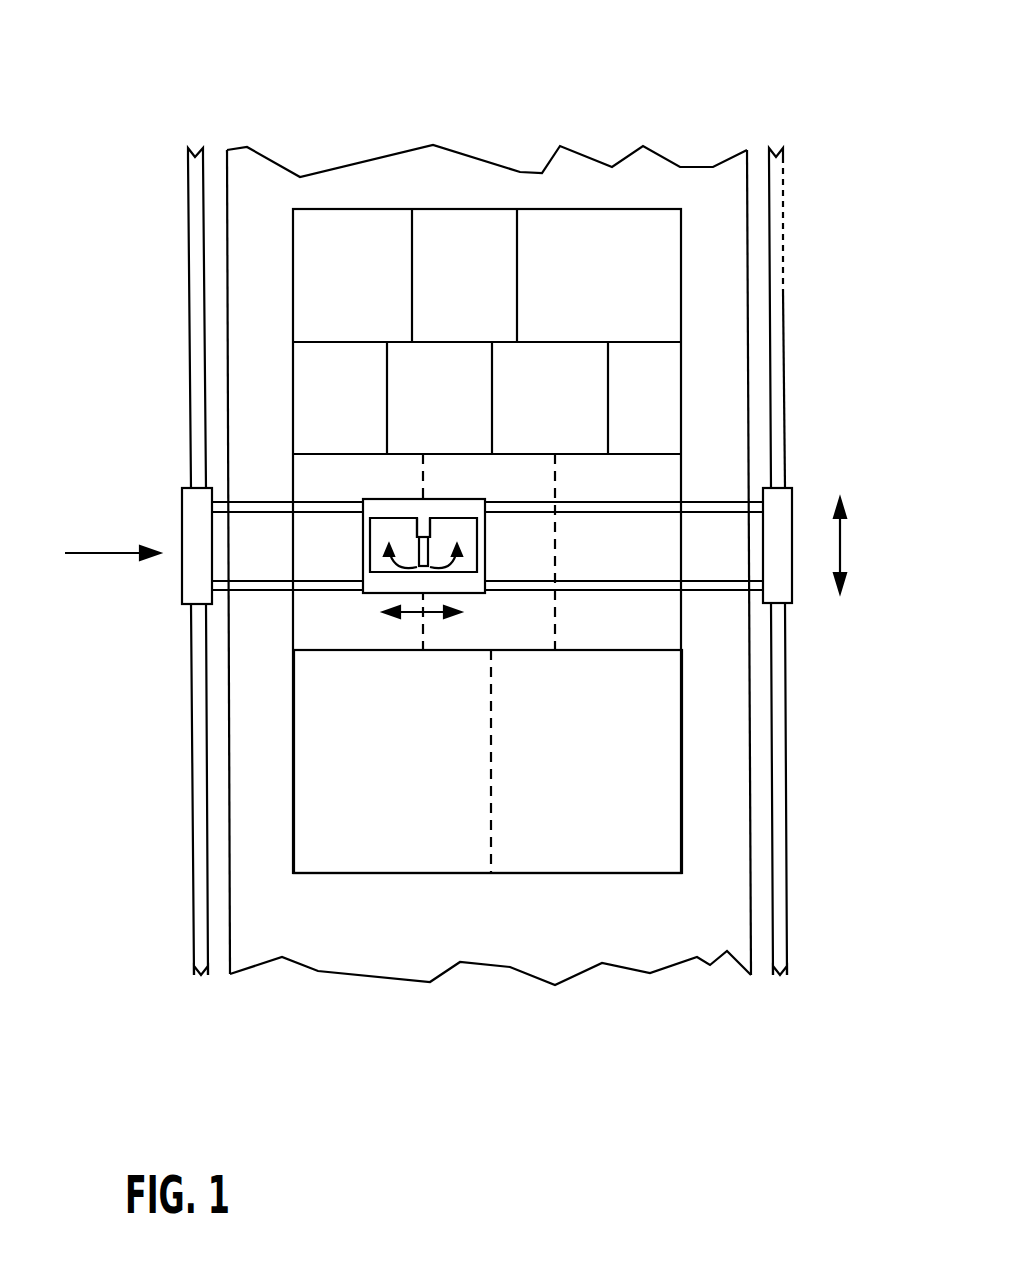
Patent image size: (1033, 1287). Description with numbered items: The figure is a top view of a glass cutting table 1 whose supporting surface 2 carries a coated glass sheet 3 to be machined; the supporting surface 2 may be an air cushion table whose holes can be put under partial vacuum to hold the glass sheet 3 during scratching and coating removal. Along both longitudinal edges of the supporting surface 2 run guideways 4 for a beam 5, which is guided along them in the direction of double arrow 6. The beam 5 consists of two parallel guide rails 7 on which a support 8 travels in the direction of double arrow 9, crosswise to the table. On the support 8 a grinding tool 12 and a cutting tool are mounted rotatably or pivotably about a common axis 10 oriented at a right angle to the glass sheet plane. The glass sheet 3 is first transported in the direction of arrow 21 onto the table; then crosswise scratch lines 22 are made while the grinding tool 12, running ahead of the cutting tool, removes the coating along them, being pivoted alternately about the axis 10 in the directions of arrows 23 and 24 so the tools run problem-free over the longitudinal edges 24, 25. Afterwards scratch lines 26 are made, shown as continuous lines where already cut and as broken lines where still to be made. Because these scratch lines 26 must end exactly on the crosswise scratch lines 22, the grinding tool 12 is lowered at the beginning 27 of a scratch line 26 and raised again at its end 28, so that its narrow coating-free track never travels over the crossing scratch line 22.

The glass cutting table 1 is at (722, 111).
The supporting surface 2 is at (370, 177).
The glass sheet 3 is at (581, 541).
The guideways 4 is at (195, 372).
The beam 5 is at (97, 553).
The double arrow 6 is at (840, 547).
The guide rails 7 is at (260, 512).
The support 8 is at (495, 629).
The double arrow 9 is at (423, 620).
The common axis 10 is at (427, 527).
The grinding tool 12 is at (397, 567).
The arrow 21 is at (515, 165).
The scratch lines 22 is at (577, 343).
The arrow 23 is at (397, 567).
The arrow 24 is at (500, 548).
The longitudinal edge 25 is at (683, 763).
The scratch lines 26 is at (413, 257).
The beginning 27 is at (424, 456).
The end 28 is at (427, 653).